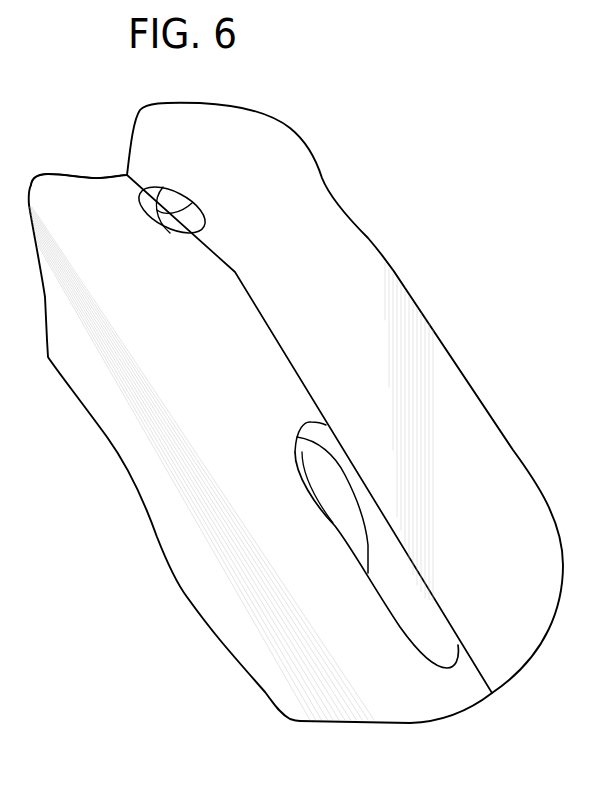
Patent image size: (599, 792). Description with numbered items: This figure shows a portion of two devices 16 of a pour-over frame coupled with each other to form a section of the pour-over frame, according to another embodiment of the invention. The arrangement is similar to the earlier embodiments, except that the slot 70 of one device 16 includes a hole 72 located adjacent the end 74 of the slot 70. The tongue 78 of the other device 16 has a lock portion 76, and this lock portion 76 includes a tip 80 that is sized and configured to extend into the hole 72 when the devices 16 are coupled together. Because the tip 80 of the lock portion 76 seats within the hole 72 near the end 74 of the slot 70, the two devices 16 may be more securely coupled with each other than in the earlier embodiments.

The device 16 is at (173, 329).
The slot 70 is at (151, 199).
The hole 72 is at (388, 609).
The end of the slot 74 is at (205, 277).
The lock portion 76 is at (370, 543).
The tongue 78 is at (192, 203).
The tip 80 is at (333, 493).